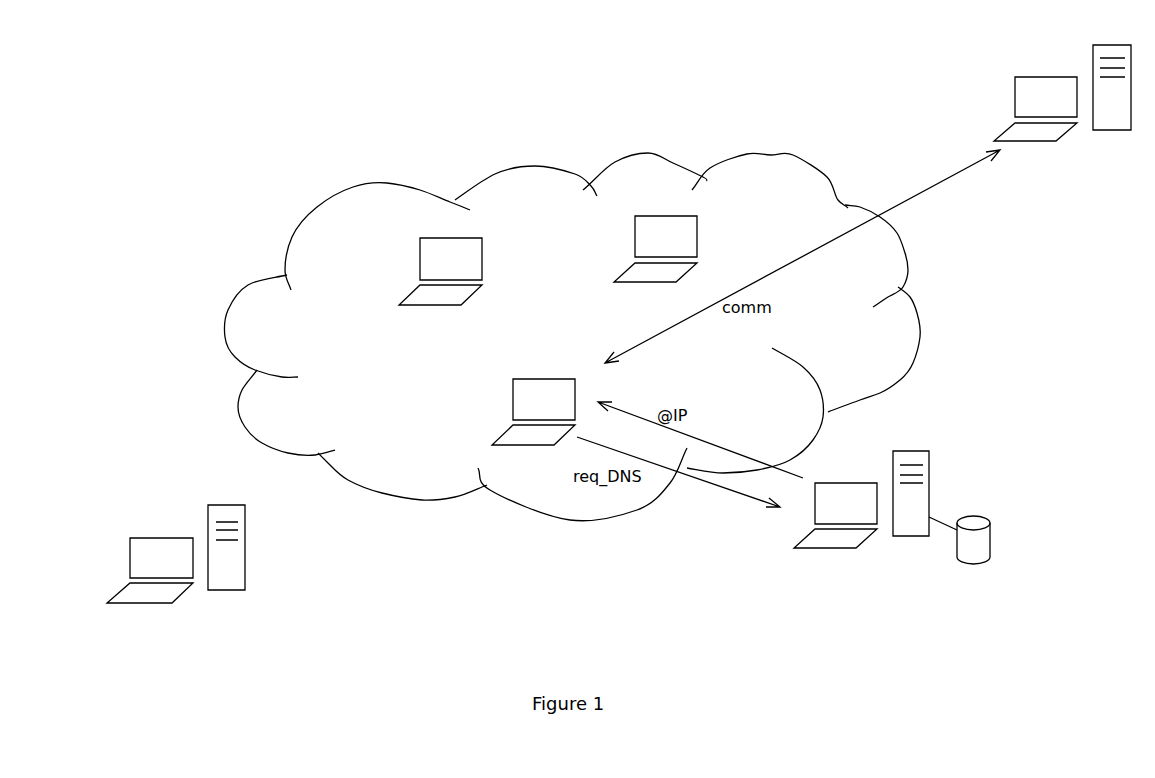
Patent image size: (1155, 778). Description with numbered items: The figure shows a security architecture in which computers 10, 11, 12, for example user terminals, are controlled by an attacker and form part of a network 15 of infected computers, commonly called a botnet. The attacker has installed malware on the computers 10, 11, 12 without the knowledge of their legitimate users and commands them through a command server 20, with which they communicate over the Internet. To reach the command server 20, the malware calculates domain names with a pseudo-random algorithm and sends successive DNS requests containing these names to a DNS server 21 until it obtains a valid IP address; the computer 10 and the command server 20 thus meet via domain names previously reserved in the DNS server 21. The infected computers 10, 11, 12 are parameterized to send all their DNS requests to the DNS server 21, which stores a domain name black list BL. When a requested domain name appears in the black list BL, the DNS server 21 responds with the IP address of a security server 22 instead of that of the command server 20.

The infected computer 10 is at (569, 379).
The infected computer 11 is at (663, 216).
The infected computer 12 is at (460, 238).
The network of infected computers 15 is at (327, 199).
The command server 20 is at (1132, 137).
The DNS server 21 is at (997, 480).
The security server 22 is at (233, 598).
The domain name black list BL is at (1011, 529).